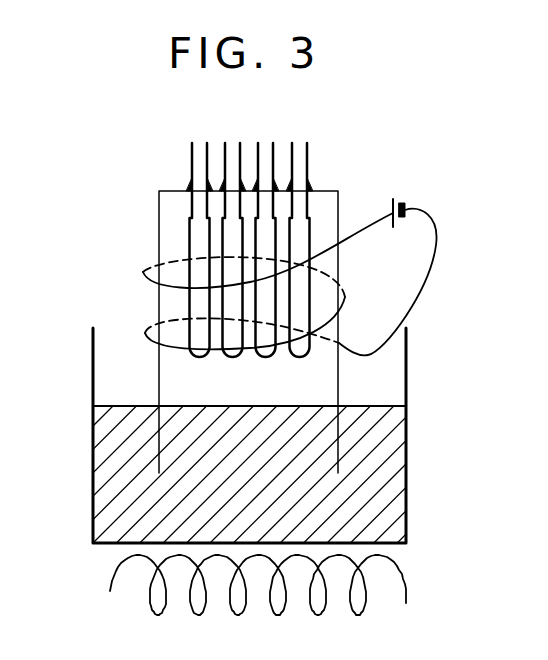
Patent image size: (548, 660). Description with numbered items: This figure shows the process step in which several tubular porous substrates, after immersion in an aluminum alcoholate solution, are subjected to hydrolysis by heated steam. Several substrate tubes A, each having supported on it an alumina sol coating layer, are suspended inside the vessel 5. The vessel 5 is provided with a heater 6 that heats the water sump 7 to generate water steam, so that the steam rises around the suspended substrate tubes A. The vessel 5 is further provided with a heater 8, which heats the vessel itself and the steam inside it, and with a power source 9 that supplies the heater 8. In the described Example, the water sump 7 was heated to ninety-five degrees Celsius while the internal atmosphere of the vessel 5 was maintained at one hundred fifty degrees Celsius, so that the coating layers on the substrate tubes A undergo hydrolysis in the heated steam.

The substrate tubes A is at (303, 143).
The vessel 5 is at (330, 191).
The heater 6 is at (407, 580).
The water sump 7 is at (387, 405).
The heater 8 is at (330, 238).
The power source 9 is at (395, 200).